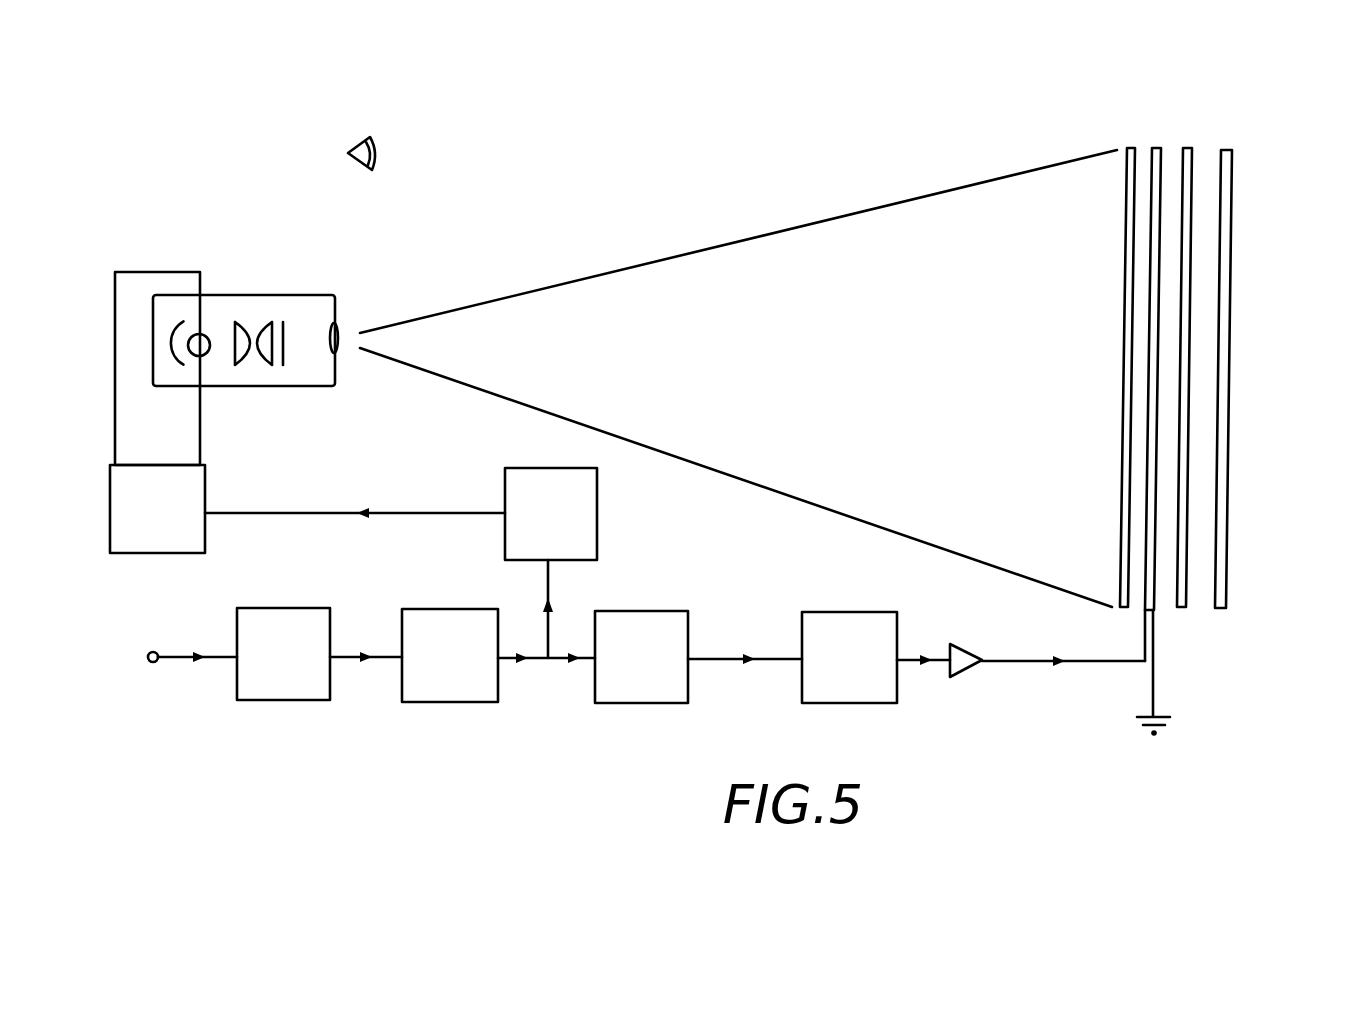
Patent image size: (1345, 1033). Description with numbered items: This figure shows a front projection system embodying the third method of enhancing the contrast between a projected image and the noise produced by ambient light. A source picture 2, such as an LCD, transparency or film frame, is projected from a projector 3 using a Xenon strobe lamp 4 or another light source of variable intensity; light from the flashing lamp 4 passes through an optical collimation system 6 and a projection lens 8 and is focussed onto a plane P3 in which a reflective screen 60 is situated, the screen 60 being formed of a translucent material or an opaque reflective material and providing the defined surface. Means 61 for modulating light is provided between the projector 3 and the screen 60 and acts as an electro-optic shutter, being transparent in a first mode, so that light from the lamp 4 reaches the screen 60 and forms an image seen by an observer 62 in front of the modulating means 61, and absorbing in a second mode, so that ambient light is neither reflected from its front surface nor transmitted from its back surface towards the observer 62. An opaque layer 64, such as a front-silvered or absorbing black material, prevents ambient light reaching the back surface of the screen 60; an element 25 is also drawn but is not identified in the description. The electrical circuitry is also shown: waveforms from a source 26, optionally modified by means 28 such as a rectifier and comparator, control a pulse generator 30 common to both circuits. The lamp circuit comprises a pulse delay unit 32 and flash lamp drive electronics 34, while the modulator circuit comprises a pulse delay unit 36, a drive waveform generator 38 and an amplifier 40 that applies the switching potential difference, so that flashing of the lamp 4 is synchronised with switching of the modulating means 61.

The source picture 2 is at (290, 330).
The projector 3 is at (203, 227).
The Xenon strobe lamp 4 is at (205, 350).
The optical collimation system 6 is at (187, 312).
The projection lens 8 is at (340, 330).
The first plate 25 is at (1132, 147).
The source 26 is at (143, 673).
The modifying means 28 is at (270, 672).
The pulse generator 30 is at (437, 672).
The pulse delay unit 32 is at (542, 527).
The flash lamp drive electronics 34 is at (145, 520).
The pulse delay unit 36 is at (627, 673).
The drive waveform generator 38 is at (838, 675).
The amplifier 40 is at (963, 679).
The reflective screen 60 is at (1189, 150).
The modulating means 61 is at (1157, 148).
The observer 62 is at (377, 133).
The opaque layer 64 is at (1230, 150).
The plane P3 is at (1190, 148).